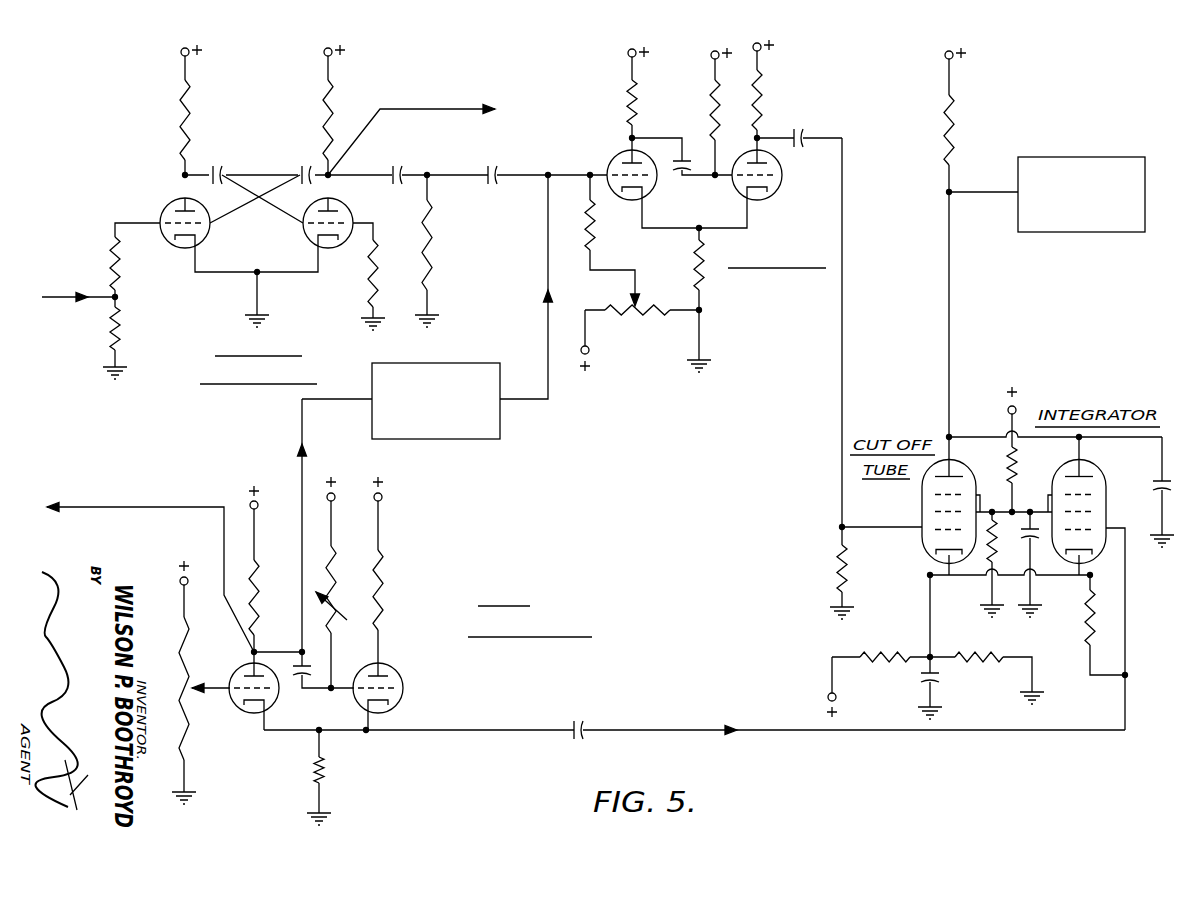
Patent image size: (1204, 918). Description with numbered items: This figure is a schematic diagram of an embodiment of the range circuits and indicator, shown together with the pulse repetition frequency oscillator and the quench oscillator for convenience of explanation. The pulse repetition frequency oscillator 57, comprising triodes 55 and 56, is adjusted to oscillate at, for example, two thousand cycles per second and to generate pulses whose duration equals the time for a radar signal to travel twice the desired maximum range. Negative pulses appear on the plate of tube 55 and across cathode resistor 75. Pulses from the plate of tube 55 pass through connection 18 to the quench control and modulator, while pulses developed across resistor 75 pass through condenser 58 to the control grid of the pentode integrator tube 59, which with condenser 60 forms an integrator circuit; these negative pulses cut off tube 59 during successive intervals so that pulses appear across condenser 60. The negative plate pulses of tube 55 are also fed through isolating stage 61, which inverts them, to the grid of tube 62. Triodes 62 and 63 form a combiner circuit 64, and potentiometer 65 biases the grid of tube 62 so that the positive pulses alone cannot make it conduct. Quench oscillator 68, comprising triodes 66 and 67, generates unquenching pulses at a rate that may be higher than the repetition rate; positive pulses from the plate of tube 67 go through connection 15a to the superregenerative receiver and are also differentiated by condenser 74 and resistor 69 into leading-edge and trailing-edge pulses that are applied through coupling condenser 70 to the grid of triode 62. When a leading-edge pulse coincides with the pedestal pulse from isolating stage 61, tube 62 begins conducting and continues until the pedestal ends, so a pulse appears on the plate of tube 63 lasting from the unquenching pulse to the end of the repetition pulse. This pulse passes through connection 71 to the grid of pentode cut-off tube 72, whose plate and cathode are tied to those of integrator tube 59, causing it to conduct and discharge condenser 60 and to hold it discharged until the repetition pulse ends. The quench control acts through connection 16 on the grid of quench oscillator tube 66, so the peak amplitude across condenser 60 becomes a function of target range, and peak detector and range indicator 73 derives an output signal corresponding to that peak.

The connection 16 is at (60, 300).
The connection 15a is at (372, 126).
The quench oscillator tube 66 is at (171, 200).
The triode 67 is at (340, 246).
The quench oscillator 68 is at (273, 253).
The resistor 69 is at (432, 265).
The condenser 74 is at (405, 173).
The coupling condenser 70 is at (498, 170).
The triode 62 is at (618, 160).
The triode 63 is at (765, 200).
The combiner circuit 64 is at (707, 217).
The potentiometer 65 is at (625, 317).
The connection 71 is at (846, 268).
The peak detector and range indicator 73 is at (1083, 157).
The cut-off tube 72 is at (920, 492).
The integrator tube 59 is at (1092, 462).
The condenser 60 is at (1167, 487).
The isolating stage 61 is at (441, 439).
The connection 18 is at (222, 529).
The triode 55 is at (240, 668).
The triode 56 is at (402, 698).
The pulse repetition frequency oscillator 57 is at (330, 717).
The cathode resistor 75 is at (325, 771).
The condenser 58 is at (590, 727).